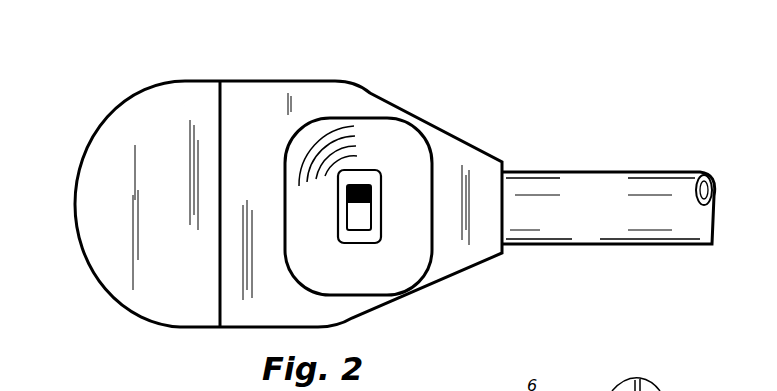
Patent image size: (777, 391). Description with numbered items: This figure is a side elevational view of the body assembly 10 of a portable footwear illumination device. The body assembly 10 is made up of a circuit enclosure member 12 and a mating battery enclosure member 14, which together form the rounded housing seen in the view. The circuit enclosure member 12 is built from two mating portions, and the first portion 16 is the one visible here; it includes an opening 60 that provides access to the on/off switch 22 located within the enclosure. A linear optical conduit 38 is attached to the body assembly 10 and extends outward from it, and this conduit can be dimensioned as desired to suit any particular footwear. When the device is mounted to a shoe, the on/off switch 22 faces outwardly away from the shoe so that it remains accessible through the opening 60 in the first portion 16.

The body assembly 10 is at (210, 57).
The circuit enclosure member 12 is at (344, 79).
The battery enclosure member 14 is at (119, 303).
The first portion of circuit enclosure member 16 is at (453, 152).
The on/off switch 22 is at (361, 213).
The linear optical conduit 38 is at (638, 171).
The opening 60 is at (357, 231).